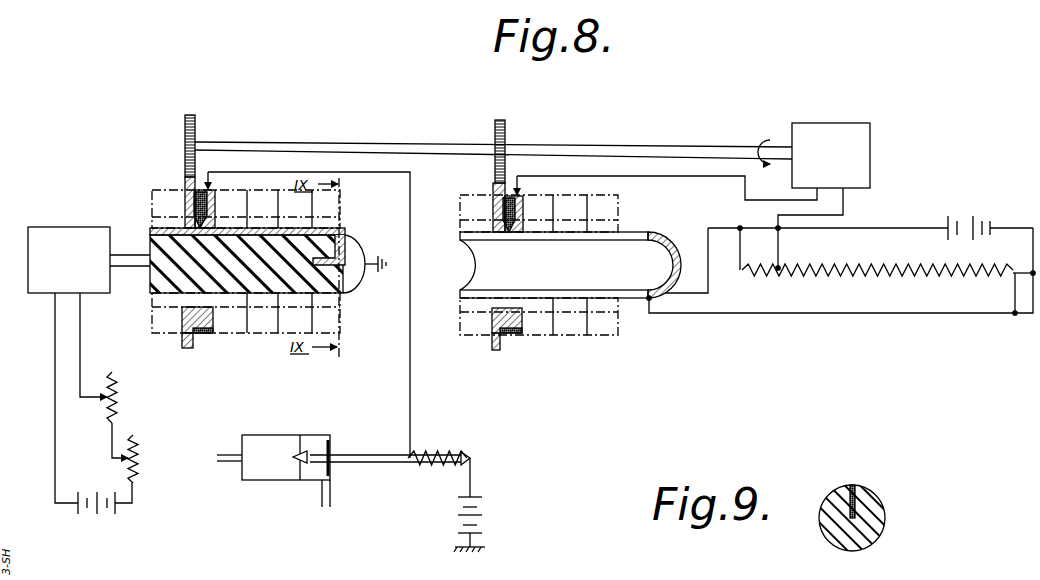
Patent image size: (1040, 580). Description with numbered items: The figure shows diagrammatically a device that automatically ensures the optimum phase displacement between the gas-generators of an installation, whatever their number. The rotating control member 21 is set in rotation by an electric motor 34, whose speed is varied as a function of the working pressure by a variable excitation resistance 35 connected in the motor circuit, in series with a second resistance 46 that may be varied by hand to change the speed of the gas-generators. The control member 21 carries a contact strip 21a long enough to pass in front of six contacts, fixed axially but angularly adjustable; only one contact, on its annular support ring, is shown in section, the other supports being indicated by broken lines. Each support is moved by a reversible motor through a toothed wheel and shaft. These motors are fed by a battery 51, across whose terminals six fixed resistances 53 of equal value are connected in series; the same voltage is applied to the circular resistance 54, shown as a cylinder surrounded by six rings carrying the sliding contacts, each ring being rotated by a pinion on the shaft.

In FIG. 8, the electric motor 34 is at (80, 274).
In FIG. 8, the second resistance 46 is at (122, 394).
In FIG. 8, the variable excitation resistance 35 is at (138, 458).
In FIG. 8, the rotating control member 21 is at (322, 280).
In FIG. 9, the rotating control member 21 is at (880, 521).
In FIG. 8, the contact strip 21a is at (327, 234).
In FIG. 9, the contact strip 21a is at (858, 497).
In FIG. 8, the circular resistance 54 is at (486, 270).
In FIG. 8, the battery 51 is at (969, 221).
In FIG. 8, the fixed resistances 53 is at (838, 272).